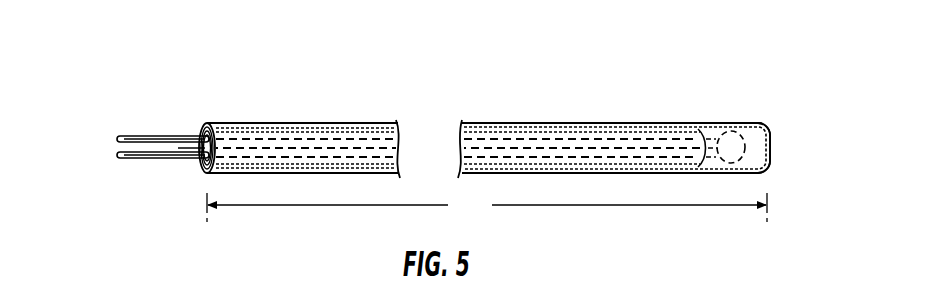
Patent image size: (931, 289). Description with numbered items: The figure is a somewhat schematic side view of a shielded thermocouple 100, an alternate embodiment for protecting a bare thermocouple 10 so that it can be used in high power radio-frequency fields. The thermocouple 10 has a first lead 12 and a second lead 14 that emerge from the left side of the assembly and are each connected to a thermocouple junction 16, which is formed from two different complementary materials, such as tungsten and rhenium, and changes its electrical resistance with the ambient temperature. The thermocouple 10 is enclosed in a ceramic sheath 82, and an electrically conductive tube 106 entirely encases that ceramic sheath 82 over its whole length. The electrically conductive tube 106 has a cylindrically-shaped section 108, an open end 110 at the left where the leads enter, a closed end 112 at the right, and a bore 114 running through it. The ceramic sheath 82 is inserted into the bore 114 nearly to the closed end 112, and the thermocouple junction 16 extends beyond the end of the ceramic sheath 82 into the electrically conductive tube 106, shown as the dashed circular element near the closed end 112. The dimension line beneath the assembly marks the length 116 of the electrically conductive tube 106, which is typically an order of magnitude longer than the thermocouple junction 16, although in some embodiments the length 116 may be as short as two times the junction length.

The thermocouple 10 is at (279, 122).
The first lead 12 is at (168, 135).
The second lead 14 is at (167, 160).
The thermocouple junction 16 is at (726, 131).
The ceramic sheath 82 is at (548, 122).
The shielded thermocouple 100 is at (369, 107).
The electrically conductive tube 106 is at (605, 122).
The cylindrically-shaped section 108 is at (627, 103).
The open end 110 is at (200, 123).
The closed end 112 is at (772, 150).
The bore 114 is at (701, 129).
The length 116 is at (487, 205).